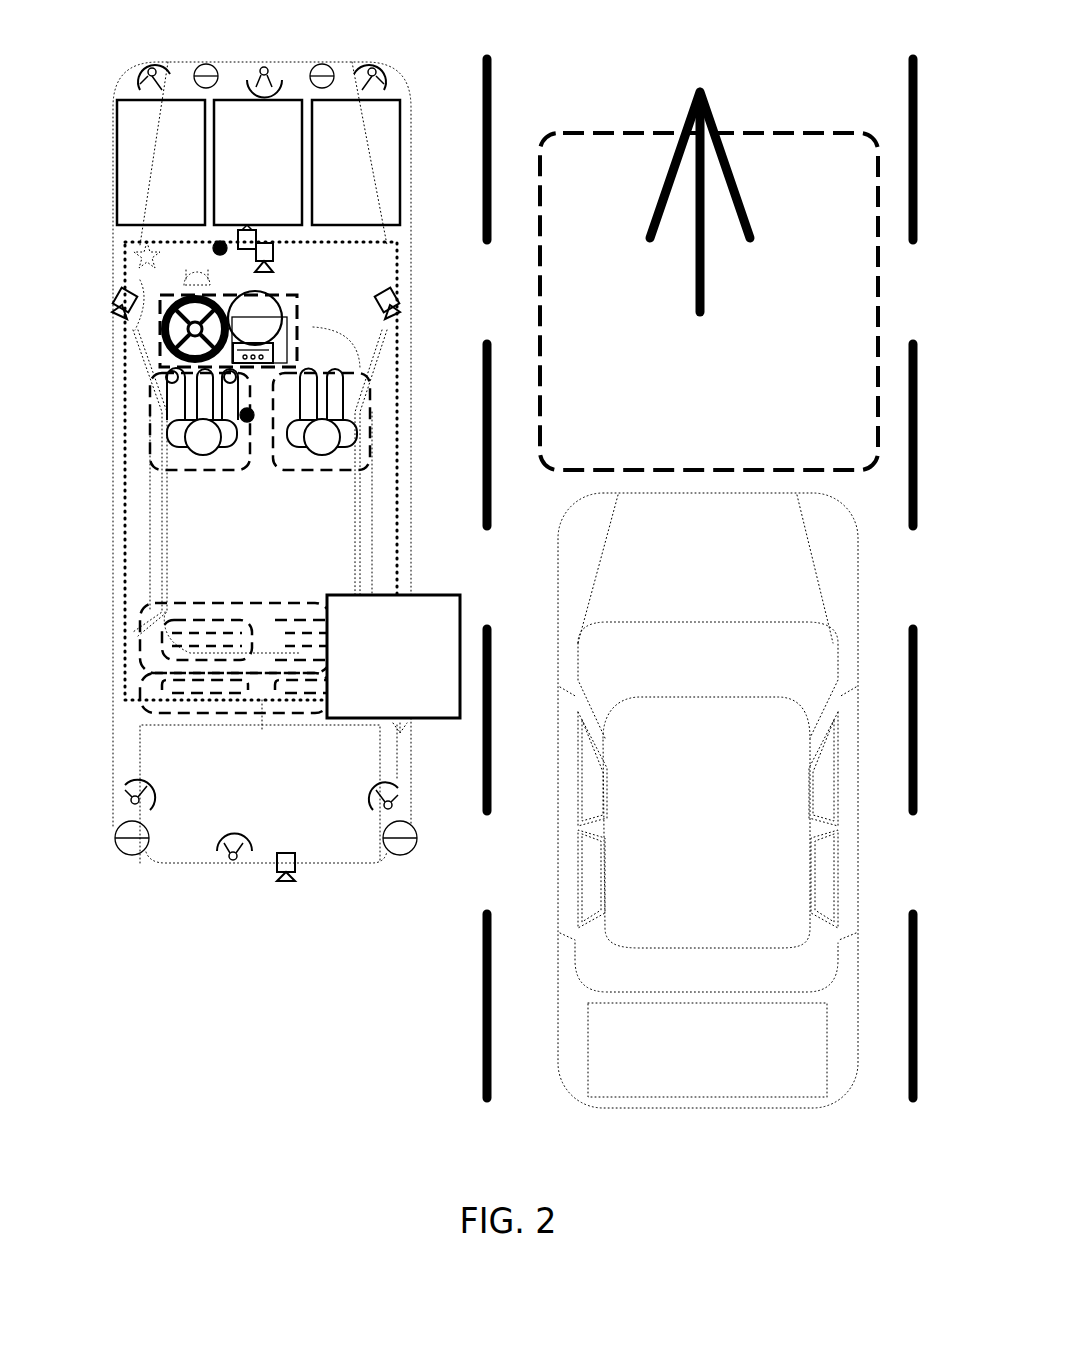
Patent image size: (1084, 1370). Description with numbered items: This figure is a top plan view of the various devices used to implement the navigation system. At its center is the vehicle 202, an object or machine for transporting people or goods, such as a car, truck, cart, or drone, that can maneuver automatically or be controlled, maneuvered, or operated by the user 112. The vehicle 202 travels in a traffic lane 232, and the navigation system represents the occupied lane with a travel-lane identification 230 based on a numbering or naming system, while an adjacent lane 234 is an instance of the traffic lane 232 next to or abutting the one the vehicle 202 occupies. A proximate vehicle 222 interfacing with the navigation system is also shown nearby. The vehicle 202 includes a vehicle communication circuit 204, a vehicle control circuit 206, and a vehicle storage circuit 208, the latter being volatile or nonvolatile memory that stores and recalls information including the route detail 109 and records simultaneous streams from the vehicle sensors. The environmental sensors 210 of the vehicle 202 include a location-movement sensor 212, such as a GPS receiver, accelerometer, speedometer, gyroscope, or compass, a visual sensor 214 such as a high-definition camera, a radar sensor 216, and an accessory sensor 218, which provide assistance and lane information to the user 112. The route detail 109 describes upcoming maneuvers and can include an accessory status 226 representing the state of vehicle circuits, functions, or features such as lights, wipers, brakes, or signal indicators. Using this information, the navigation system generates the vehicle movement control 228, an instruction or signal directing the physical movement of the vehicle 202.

The route detail 109 is at (393, 656).
The user 112 is at (202, 447).
The vehicle 202 is at (417, 32).
The vehicle communication circuit 204 is at (356, 162).
The vehicle control circuit 206 is at (161, 162).
The vehicle storage circuit 208 is at (258, 162).
The environmental sensors 210 is at (104, 240).
The location-movement sensor 212 is at (255, 318).
The visual sensor 214 is at (273, 253).
The radar sensor 216 is at (138, 792).
The accessory sensor 218 is at (215, 250).
The proximate vehicle 222 is at (717, 863).
The accessory status 226 is at (280, 347).
The vehicle movement control 228 is at (194, 330).
The travel-lane identification 230 is at (877, 272).
The traffic lane 232 is at (921, 1127).
The adjacent lane 234 is at (898, 64).